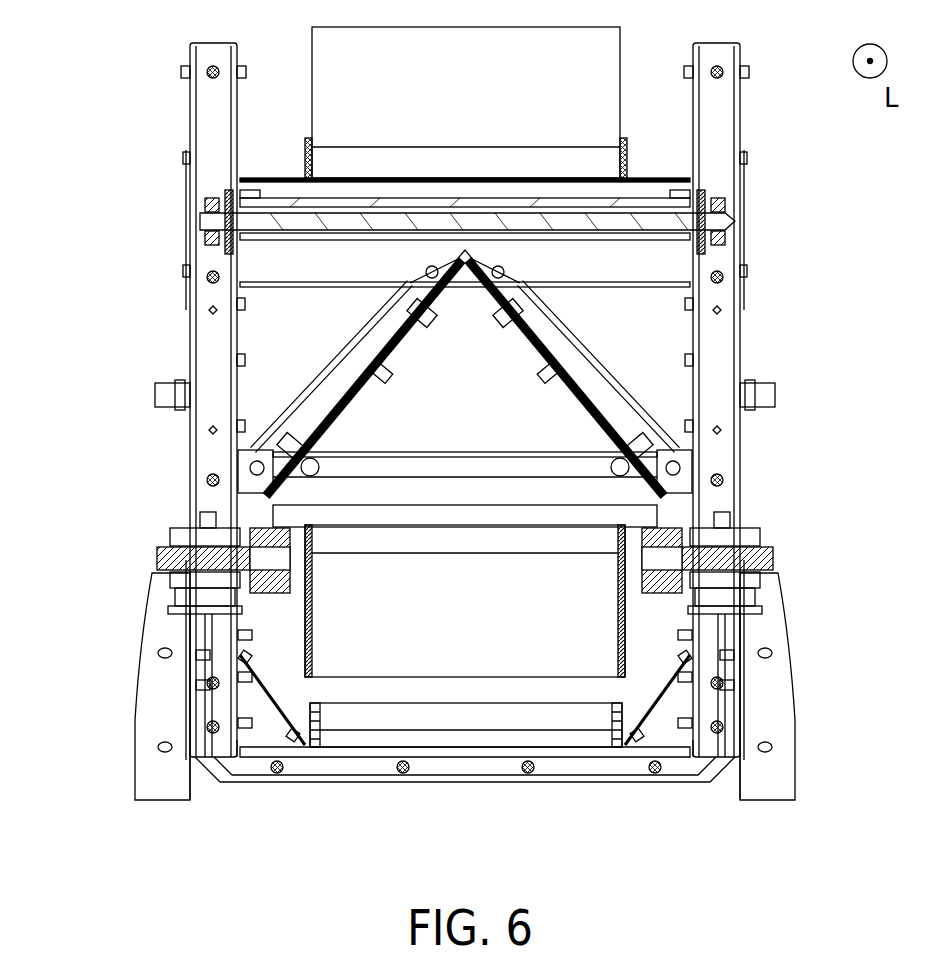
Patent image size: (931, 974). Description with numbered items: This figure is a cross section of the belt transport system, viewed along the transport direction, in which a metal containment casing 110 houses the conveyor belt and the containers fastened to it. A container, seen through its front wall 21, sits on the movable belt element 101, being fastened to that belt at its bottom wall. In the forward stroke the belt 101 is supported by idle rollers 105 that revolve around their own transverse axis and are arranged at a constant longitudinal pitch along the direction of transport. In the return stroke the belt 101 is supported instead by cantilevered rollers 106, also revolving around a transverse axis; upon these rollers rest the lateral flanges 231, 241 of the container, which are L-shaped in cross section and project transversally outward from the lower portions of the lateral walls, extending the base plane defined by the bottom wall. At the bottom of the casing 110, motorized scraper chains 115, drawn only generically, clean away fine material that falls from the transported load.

The containment casing 110 is at (185, 49).
The front wall 21 is at (476, 97).
The movable belt element 101 is at (268, 187).
The idle rollers 105 is at (183, 216).
The cantilevered rollers 106 is at (150, 550).
The external flange of first lateral wall 231 is at (250, 524).
The external flange of second lateral wall 241 is at (680, 524).
The scraper chains 115 is at (340, 743).